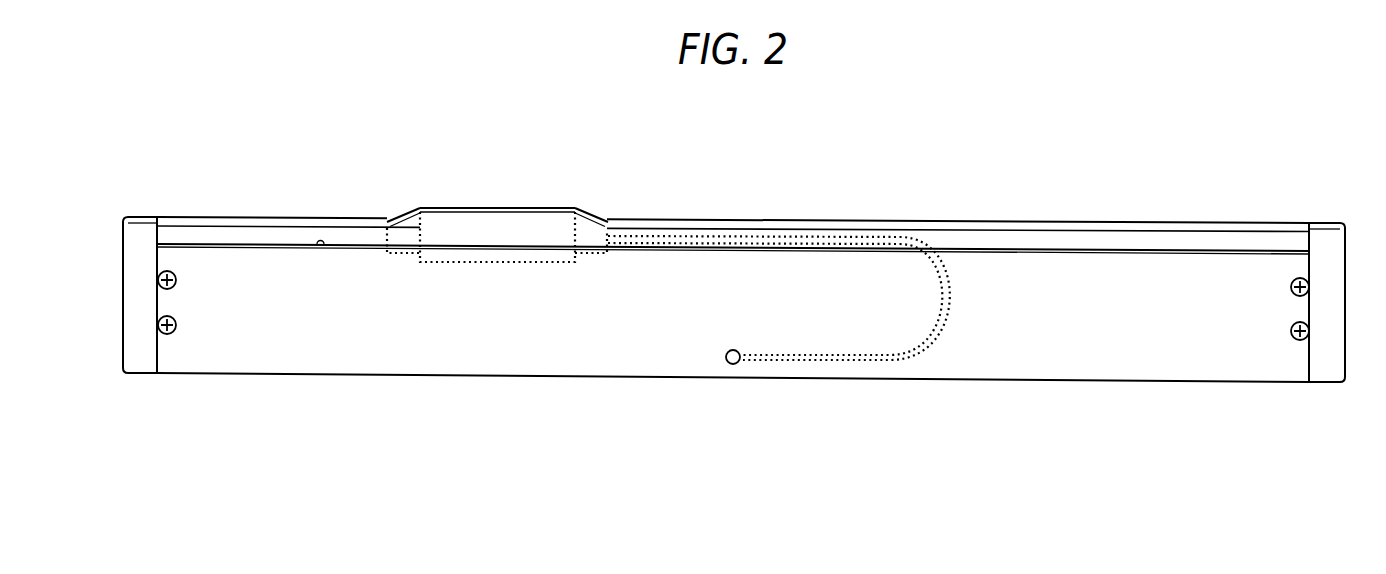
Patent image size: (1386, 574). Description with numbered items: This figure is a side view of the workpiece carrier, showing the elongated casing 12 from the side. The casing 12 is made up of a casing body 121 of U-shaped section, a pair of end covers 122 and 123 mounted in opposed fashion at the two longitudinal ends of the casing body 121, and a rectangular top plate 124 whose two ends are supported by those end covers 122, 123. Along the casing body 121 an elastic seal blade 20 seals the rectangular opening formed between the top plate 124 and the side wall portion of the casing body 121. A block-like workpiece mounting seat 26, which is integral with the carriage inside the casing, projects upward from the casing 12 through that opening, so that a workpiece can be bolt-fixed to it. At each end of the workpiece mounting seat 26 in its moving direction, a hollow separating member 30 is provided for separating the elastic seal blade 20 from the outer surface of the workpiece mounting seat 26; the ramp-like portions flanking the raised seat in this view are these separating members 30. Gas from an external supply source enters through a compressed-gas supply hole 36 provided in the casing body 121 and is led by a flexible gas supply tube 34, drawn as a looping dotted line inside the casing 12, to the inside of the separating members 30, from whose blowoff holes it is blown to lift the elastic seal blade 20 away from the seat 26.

The casing 12 is at (655, 340).
The elastic seal blade 20 is at (510, 222).
The workpiece mounting seat 26 is at (470, 206).
The separating member 30 is at (405, 212).
The gas supply tube 34 is at (852, 240).
The compressed-gas supply hole 36 is at (733, 365).
The casing body 121 is at (482, 355).
The end cover 122 is at (140, 362).
The end cover 123 is at (1325, 370).
The top plate 124 is at (786, 225).